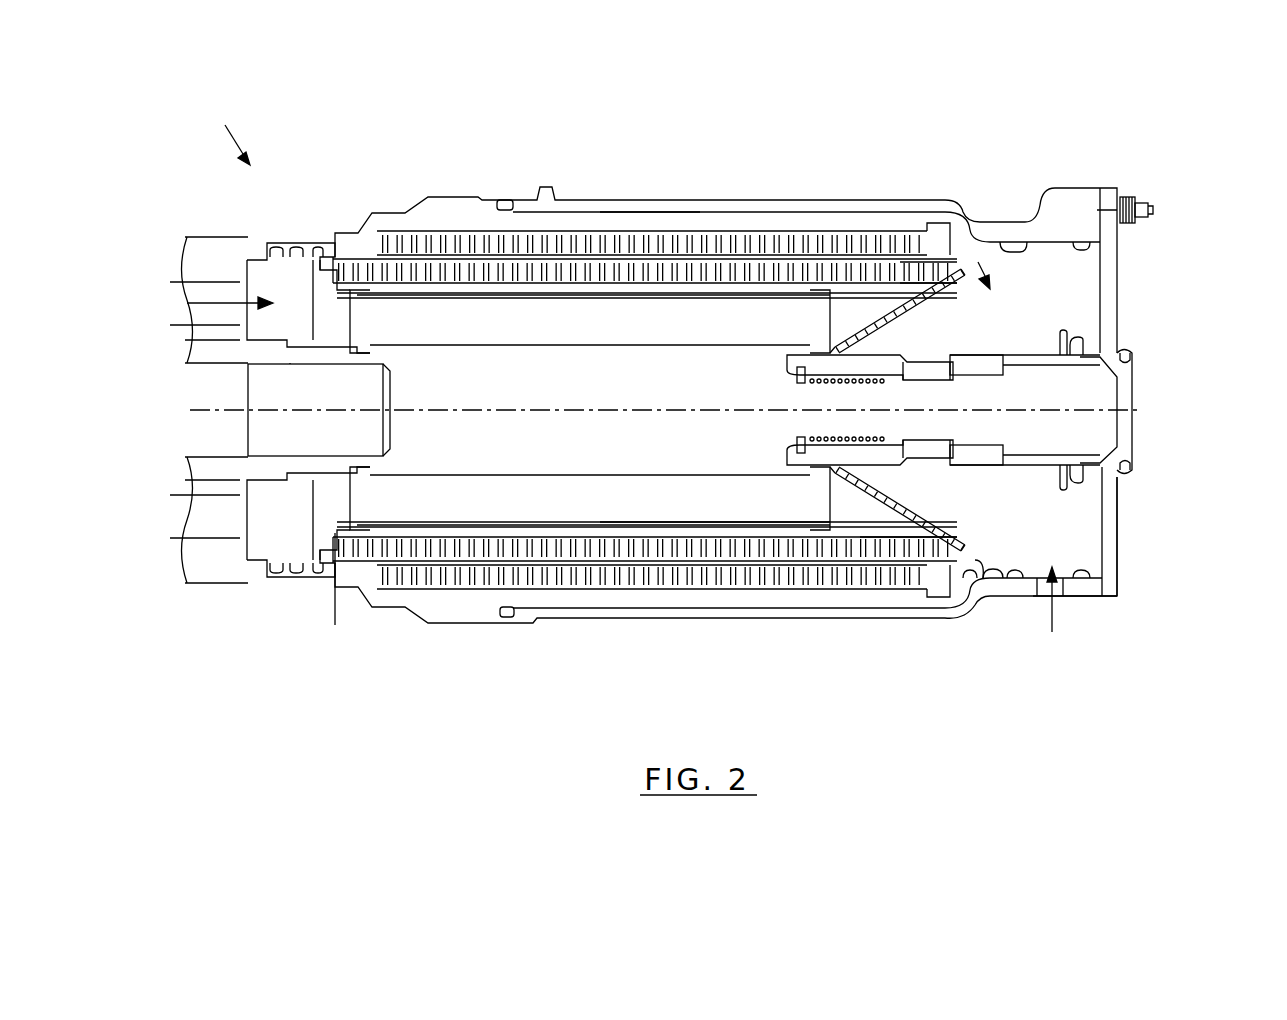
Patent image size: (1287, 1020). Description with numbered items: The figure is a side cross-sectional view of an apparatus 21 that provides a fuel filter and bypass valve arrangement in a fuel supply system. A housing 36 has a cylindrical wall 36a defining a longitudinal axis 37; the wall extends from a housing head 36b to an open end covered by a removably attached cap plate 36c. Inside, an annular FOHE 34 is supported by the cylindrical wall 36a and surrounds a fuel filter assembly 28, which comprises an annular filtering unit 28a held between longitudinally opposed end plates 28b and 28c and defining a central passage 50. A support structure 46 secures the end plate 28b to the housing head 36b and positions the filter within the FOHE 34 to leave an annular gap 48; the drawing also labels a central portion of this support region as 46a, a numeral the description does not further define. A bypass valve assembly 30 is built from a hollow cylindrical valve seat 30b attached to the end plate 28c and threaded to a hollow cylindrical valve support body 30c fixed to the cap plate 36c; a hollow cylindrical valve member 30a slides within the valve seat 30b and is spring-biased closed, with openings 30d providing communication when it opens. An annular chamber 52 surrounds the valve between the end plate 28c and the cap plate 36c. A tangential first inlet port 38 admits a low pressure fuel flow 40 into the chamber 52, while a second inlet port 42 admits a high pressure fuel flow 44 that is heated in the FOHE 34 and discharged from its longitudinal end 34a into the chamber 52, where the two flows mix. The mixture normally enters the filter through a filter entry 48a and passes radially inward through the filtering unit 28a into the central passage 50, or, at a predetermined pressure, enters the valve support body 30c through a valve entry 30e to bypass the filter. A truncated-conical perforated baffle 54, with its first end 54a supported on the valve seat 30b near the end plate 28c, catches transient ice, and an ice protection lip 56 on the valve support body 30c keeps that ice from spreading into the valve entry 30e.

The apparatus 21 is at (224, 132).
The fuel filter assembly 28 is at (668, 313).
The annular filtering unit 28a is at (727, 510).
The end plate 28b is at (343, 591).
The end plate 28c is at (876, 510).
The bypass valve assembly 30 is at (912, 360).
The hollow cylindrical valve member 30a is at (893, 433).
The hollow cylindrical valve seat 30b is at (913, 460).
The hollow cylindrical valve support body 30c is at (1005, 353).
The openings 30d is at (952, 442).
The valve entry 30e is at (1083, 353).
The FOHE 34 is at (543, 255).
The longitudinal end 34a is at (983, 550).
The housing 36 is at (640, 198).
The cylindrical wall 36a is at (680, 198).
The housing head 36b is at (215, 570).
The cap plate 36c is at (1110, 497).
The longitudinal axis 37 is at (1147, 410).
The first inlet port 38 is at (1057, 592).
The low pressure fuel flow 40 is at (1050, 622).
The second inlet port 42 is at (178, 292).
The high pressure fuel flow 44 is at (223, 303).
The support structure 46 is at (262, 378).
The hub 46a is at (340, 443).
The annular gap 48 is at (640, 533).
The filter entry 48a is at (845, 283).
The central passage 50 is at (632, 450).
The chamber 52 is at (982, 333).
The perforated baffle 54 is at (943, 530).
The first end 54a is at (838, 345).
The ice protection lip 56 is at (1067, 333).